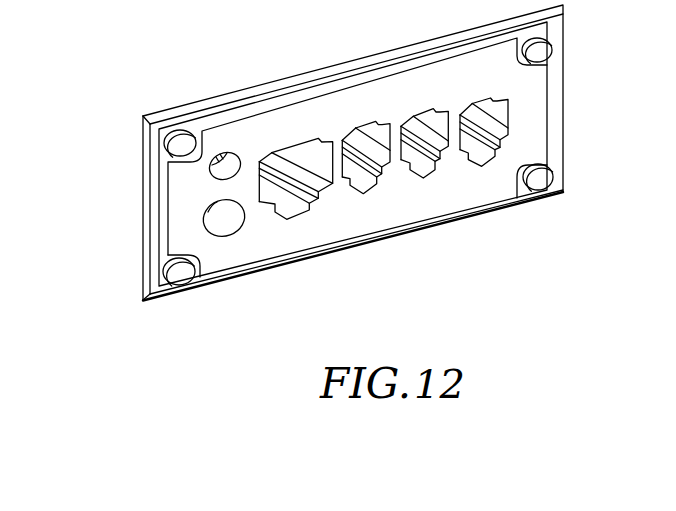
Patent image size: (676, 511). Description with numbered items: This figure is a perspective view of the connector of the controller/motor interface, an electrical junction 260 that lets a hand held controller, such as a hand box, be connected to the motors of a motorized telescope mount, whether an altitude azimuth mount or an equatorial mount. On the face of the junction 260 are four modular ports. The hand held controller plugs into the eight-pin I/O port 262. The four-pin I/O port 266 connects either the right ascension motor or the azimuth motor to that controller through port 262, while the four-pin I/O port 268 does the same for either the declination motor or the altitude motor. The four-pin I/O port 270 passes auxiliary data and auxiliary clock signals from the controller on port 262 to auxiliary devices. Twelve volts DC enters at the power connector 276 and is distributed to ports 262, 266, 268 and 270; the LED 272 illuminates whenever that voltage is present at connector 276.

The electrical junction 260 is at (264, 84).
The 8-pin RJ-11 I/O port 262 is at (297, 215).
The 4-pin RJ-11 I/O port 266 is at (365, 122).
The 4-pin RJ-11 I/O port 268 is at (425, 184).
The 4-pin RJ-11 I/O port 270 is at (482, 95).
The LED 272 is at (210, 166).
The power connector 276 is at (231, 236).